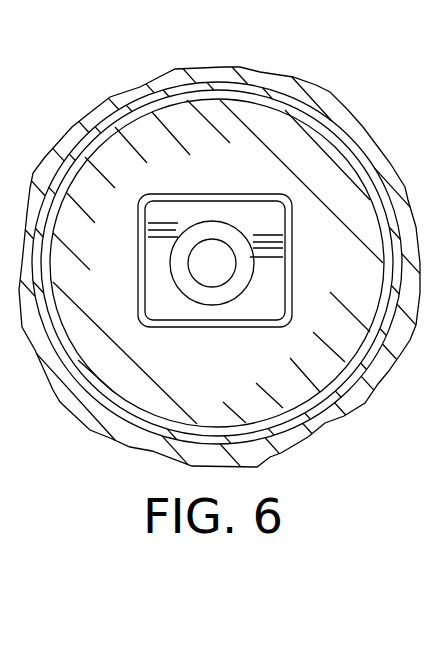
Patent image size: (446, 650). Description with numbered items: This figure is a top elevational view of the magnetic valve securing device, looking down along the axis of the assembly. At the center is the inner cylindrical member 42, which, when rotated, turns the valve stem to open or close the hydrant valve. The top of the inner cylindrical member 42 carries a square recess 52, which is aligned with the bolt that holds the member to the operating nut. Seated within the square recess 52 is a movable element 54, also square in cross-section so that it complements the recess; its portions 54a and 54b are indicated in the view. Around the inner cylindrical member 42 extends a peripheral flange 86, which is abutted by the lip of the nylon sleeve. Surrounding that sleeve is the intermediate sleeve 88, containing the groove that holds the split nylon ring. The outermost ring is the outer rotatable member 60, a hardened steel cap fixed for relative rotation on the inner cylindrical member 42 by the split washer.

The inner cylindrical member 42 is at (217, 106).
The square recess 52 is at (239, 194).
The movable element 54 is at (148, 287).
The bore portion 54a is at (260, 300).
The bore portion 54b is at (247, 272).
The outer rotatable member 60 is at (361, 418).
The peripheral flange 86 is at (292, 113).
The intermediate sleeve 88 is at (106, 124).